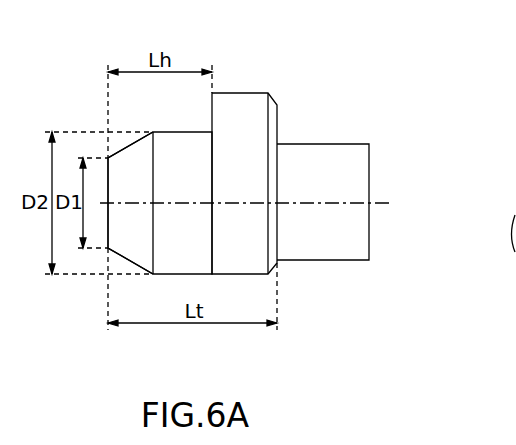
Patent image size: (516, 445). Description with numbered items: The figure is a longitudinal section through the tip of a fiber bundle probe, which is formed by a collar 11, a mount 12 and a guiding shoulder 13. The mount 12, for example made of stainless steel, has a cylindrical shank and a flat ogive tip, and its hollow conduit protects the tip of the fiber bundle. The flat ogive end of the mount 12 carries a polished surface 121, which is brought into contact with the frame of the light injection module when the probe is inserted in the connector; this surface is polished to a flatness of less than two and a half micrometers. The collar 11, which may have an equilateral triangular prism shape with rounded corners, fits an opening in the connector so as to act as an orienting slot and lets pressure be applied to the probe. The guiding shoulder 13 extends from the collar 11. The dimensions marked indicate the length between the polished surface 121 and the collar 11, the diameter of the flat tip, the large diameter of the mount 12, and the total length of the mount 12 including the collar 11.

The collar 11 is at (243, 107).
The mount 12 is at (180, 257).
The polished surface 121 is at (107, 181).
The guiding shoulder 13 is at (330, 158).